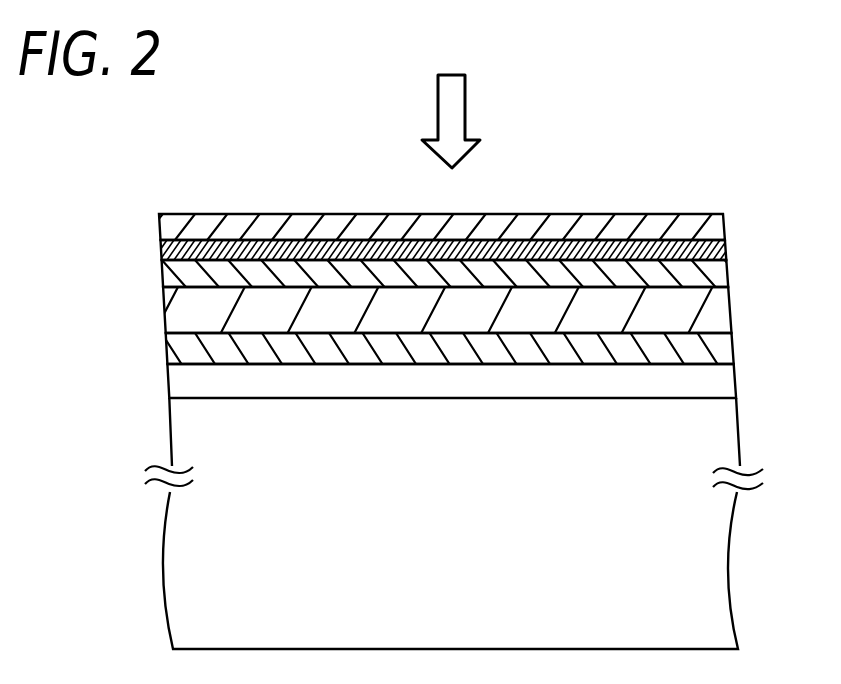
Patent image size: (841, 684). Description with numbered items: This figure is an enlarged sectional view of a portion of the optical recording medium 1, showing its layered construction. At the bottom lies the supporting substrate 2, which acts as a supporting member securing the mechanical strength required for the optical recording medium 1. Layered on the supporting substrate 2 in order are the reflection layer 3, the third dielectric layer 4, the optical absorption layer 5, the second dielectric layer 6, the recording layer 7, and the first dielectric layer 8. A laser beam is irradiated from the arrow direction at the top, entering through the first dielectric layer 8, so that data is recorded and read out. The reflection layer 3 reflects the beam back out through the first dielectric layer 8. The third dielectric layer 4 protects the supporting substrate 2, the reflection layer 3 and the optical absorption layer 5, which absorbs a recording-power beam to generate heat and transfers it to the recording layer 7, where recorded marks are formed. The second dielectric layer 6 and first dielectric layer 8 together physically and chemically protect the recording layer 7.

The optical recording medium 1 is at (652, 182).
The supporting substrate 2 is at (720, 530).
The reflection layer 3 is at (717, 379).
The third dielectric layer 4 is at (717, 346).
The optical absorption layer 5 is at (717, 308).
The second dielectric layer 6 is at (717, 271).
The recording layer 7 is at (726, 248).
The first dielectric layer 8 is at (717, 227).